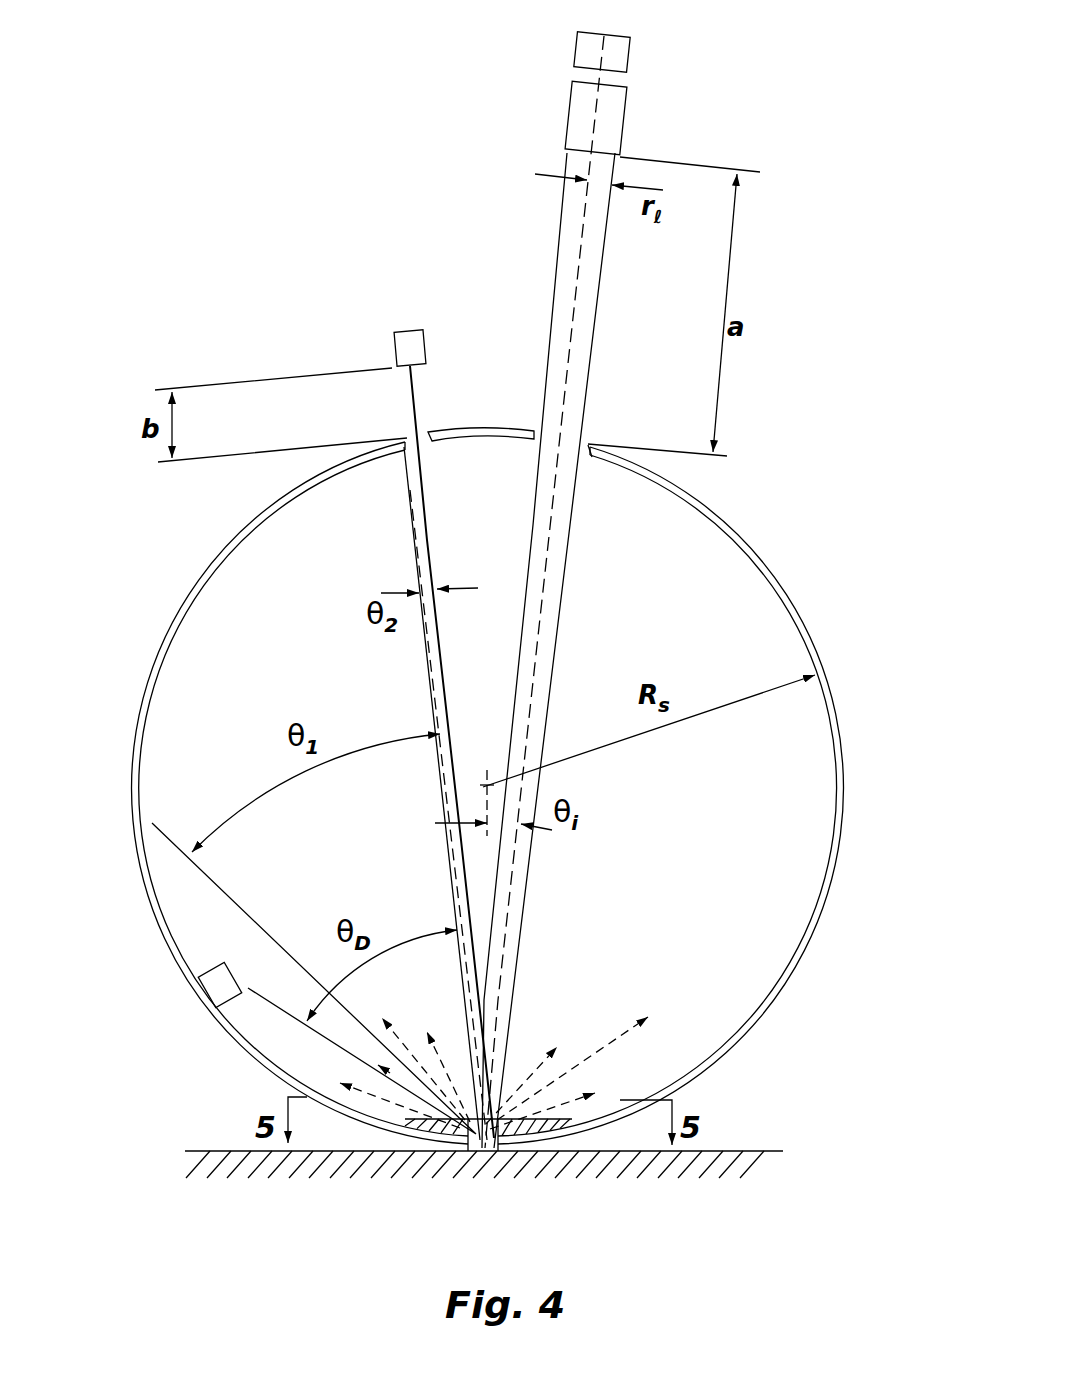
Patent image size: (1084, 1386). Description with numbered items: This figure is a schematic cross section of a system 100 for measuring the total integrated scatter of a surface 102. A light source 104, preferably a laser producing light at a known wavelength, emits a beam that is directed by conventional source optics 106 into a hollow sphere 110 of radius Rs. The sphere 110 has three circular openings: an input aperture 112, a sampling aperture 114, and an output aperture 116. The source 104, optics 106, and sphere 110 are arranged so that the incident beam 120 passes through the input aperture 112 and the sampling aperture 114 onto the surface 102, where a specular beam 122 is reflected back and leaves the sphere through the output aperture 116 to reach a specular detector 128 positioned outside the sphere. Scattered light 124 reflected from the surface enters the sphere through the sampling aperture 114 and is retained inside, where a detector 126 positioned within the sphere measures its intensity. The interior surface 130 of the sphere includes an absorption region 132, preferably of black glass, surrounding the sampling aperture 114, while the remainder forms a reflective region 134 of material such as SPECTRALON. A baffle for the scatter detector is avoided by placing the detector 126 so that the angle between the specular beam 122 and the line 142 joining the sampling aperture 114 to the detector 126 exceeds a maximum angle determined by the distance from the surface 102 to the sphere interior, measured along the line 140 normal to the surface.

The system 100 is at (402, 173).
The surface 102 is at (710, 1151).
The light source 104 is at (618, 50).
The source optics 106 is at (614, 117).
The hollow sphere 110 is at (782, 588).
The input aperture 112 is at (591, 424).
The sampling aperture 114 is at (470, 1153).
The output aperture 116 is at (428, 432).
The incident beam 120 is at (594, 327).
The specular beam 122 is at (418, 553).
The scattered light 124 is at (402, 1055).
The detector 126 is at (222, 983).
The specular detector 128 is at (408, 353).
The interior surface 130 is at (797, 960).
The absorption region 132 is at (588, 1116).
The reflective region 134 is at (704, 859).
The line normal to the surface 140 is at (487, 808).
The line between sampling aperture and scatter detector 142 is at (282, 1010).